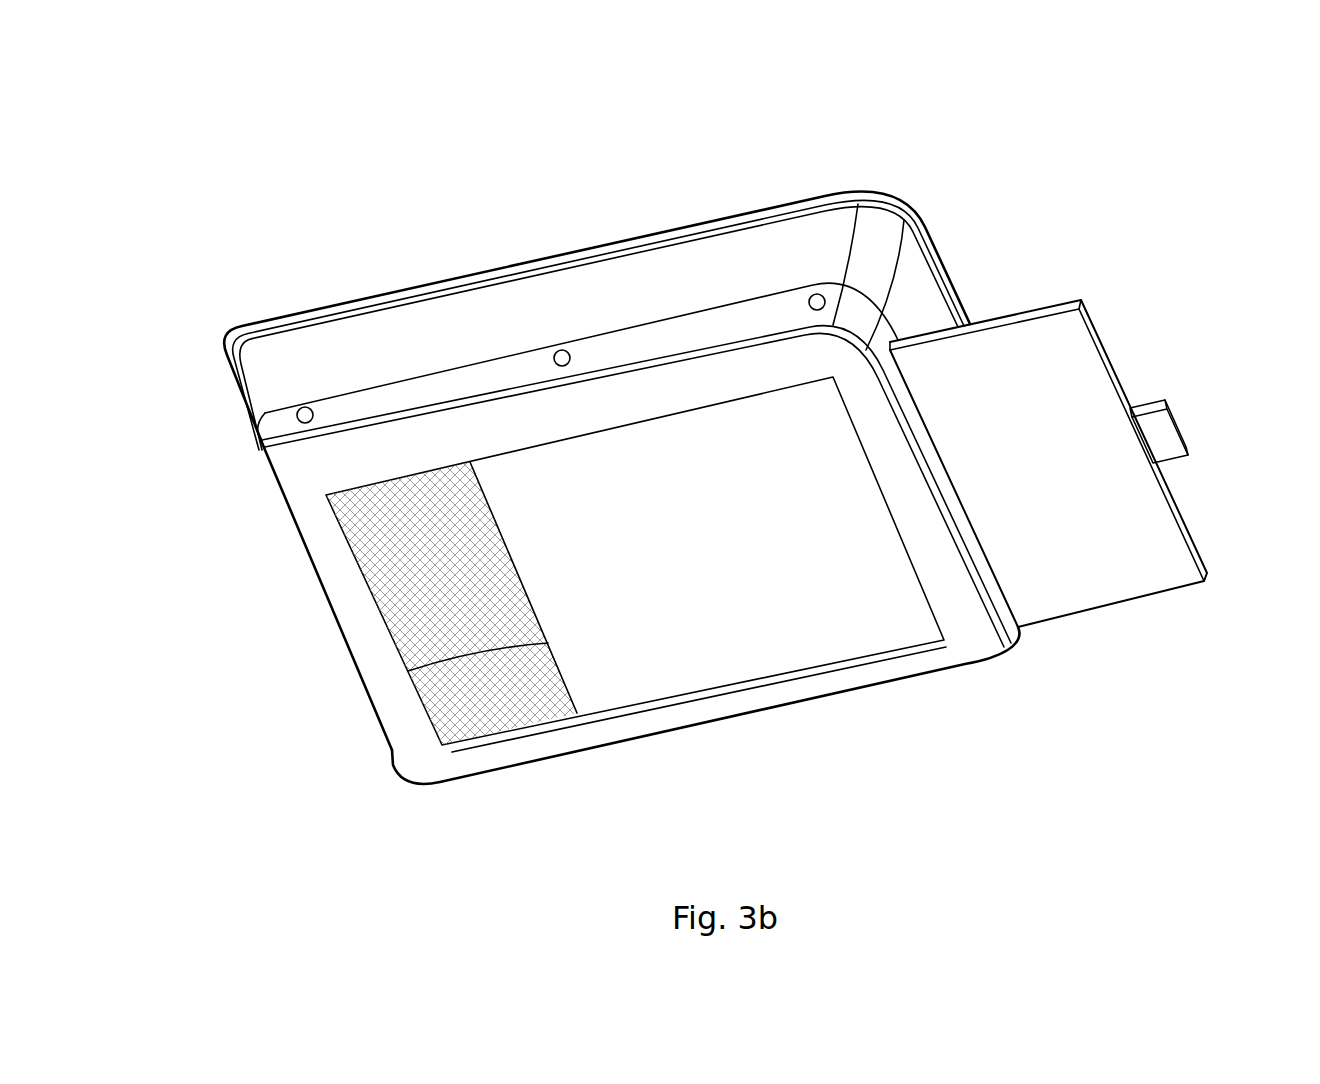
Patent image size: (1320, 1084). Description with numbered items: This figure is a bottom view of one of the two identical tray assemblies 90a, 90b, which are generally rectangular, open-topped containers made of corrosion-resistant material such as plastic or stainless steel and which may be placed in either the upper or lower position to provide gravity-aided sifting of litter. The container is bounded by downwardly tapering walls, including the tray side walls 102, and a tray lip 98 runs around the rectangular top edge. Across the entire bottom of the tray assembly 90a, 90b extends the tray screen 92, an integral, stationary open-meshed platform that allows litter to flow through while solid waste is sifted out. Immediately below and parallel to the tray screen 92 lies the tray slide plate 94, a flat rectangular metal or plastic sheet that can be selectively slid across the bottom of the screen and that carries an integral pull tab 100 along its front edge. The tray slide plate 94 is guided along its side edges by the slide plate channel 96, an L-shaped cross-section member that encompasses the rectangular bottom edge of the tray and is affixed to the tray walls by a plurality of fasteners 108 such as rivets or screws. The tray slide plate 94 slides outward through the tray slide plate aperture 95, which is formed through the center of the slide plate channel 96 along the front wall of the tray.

The tray assembly 90a is at (706, 447).
The tray assembly 90b is at (1070, 136).
The tray screen 92 is at (402, 586).
The tray slide plate 94 is at (1072, 595).
The tray slide plate aperture 95 is at (930, 432).
The slide plate channel 96 is at (468, 745).
The tray lip 98 is at (229, 386).
The pull tab 100 is at (1158, 440).
The tray side wall 102 is at (669, 268).
The fasteners 108 is at (560, 352).